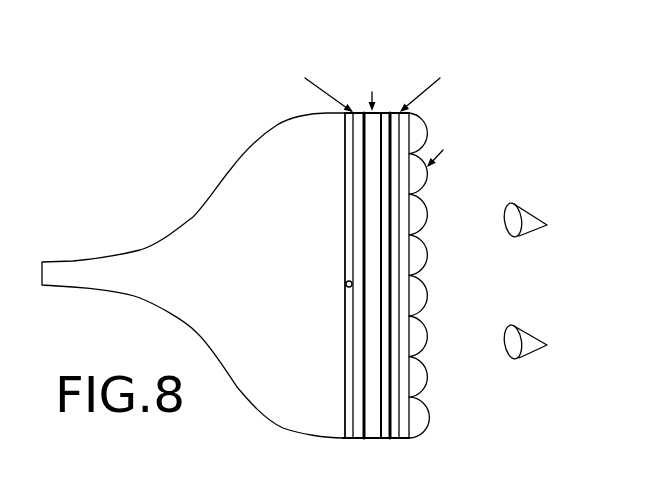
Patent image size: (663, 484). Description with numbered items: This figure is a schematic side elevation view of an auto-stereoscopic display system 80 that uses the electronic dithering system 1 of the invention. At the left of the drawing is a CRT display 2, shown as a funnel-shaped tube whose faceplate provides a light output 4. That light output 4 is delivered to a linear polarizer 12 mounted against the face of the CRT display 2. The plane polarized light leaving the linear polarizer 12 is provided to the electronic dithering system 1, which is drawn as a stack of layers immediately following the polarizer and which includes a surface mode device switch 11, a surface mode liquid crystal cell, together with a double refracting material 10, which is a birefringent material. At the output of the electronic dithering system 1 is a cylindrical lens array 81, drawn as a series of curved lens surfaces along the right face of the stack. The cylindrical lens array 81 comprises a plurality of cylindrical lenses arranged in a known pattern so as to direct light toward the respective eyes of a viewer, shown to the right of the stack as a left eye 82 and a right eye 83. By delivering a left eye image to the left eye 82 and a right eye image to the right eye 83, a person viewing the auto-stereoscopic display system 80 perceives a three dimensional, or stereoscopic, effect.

The auto-stereoscopic display system 80 is at (350, 56).
The electronic dithering system 1 is at (383, 57).
The CRT display 2 is at (229, 173).
The light output 4 is at (348, 281).
The linear polarizer 12 is at (354, 133).
The surface mode device switch 11 is at (380, 110).
The double refracting material 10 is at (403, 133).
The cylindrical lens array 81 is at (432, 420).
The left eye 82 is at (511, 323).
The right eye 83 is at (511, 237).